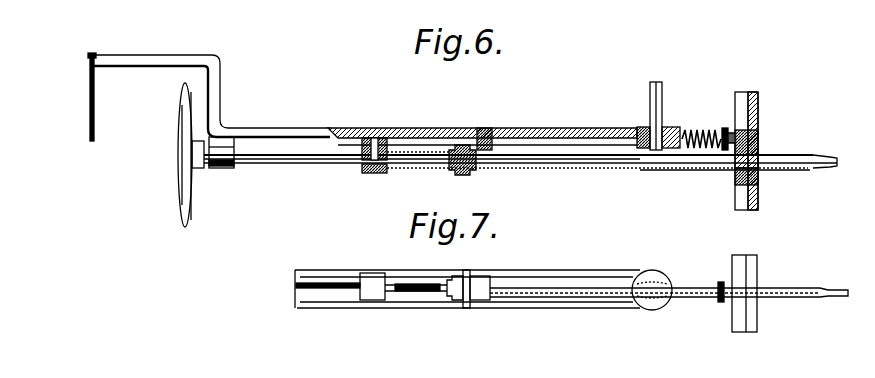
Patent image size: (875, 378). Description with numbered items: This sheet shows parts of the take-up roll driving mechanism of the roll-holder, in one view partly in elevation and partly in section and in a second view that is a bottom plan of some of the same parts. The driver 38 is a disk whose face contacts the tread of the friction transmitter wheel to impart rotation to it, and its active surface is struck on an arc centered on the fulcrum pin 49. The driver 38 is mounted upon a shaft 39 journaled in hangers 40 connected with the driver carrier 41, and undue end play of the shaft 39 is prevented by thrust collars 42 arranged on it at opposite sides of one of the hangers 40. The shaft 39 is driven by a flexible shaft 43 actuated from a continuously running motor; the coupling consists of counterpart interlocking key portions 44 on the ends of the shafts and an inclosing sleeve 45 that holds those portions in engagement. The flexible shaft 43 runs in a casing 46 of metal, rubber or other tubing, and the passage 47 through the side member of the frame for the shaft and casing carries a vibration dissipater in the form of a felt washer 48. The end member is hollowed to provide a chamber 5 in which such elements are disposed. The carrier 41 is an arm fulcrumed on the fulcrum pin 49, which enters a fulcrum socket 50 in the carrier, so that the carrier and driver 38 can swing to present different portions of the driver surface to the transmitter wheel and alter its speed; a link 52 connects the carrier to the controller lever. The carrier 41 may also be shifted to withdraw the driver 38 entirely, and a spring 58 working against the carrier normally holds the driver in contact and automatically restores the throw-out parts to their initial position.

In FIG. 6, the chamber 5 is at (760, 102).
In FIG. 6, the driver 38 is at (180, 178).
In FIG. 6, the shaft 39 is at (338, 161).
In FIG. 6, the hanger 40 is at (382, 174).
In FIG. 6, the driver carrier 41 is at (432, 128).
In FIG. 7, the driver carrier 41 is at (545, 272).
In FIG. 6, the thrust collar 42 is at (198, 168).
In FIG. 6, the flexible shaft 43 is at (637, 169).
In FIG. 7, the interlocking key portion 44 is at (415, 293).
In FIG. 6, the inclosing sleeve 45 is at (432, 157).
In FIG. 7, the inclosing sleeve 45 is at (437, 295).
In FIG. 6, the casing 46 is at (703, 174).
In FIG. 7, the casing 46 is at (693, 288).
In FIG. 6, the passage 47 is at (758, 176).
In FIG. 6, the felt washer 48 is at (738, 176).
In FIG. 6, the fulcrum pin 49 is at (664, 98).
In FIG. 6, the fulcrum socket 50 is at (648, 130).
In FIG. 6, the link 52 is at (90, 101).
In FIG. 6, the spring 58 is at (704, 130).